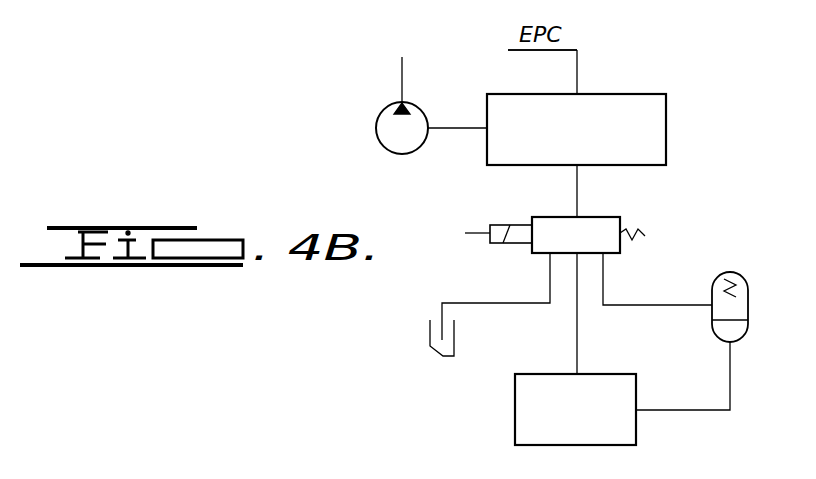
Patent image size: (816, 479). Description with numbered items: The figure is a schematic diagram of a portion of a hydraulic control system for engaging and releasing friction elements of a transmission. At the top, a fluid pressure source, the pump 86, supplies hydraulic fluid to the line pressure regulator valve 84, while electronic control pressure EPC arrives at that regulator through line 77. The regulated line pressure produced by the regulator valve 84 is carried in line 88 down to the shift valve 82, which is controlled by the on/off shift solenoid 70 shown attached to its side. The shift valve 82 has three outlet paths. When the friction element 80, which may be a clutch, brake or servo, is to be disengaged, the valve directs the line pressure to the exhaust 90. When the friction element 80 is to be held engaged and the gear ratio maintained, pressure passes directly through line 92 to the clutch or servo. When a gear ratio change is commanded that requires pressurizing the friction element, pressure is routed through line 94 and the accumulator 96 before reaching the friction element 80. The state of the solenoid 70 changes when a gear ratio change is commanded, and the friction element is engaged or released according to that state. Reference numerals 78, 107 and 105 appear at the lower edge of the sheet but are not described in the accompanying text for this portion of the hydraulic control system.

The line 77 is at (580, 52).
The line pressure regulator valve 84 is at (667, 112).
The pump 86 is at (375, 131).
The line 88 is at (579, 192).
The shift valve 82 is at (547, 224).
The on/off shift solenoid 70 is at (512, 243).
The exhaust 90 is at (443, 356).
The line 92 is at (575, 346).
The line 94 is at (636, 305).
The accumulator 96 is at (750, 292).
The friction element (clutch, brake or servo) 80 is at (628, 446).
The element 78 is at (182, 468).
The element 107 is at (286, 478).
The element 105 is at (338, 478).